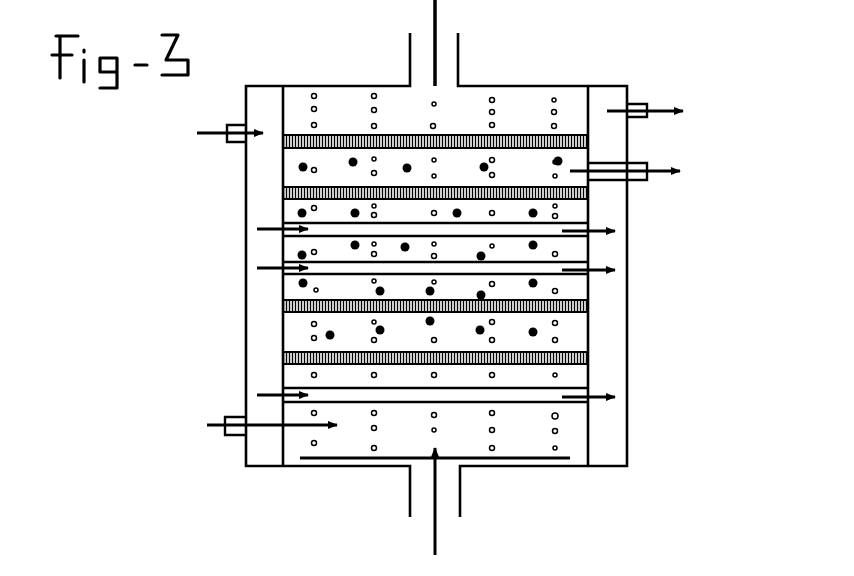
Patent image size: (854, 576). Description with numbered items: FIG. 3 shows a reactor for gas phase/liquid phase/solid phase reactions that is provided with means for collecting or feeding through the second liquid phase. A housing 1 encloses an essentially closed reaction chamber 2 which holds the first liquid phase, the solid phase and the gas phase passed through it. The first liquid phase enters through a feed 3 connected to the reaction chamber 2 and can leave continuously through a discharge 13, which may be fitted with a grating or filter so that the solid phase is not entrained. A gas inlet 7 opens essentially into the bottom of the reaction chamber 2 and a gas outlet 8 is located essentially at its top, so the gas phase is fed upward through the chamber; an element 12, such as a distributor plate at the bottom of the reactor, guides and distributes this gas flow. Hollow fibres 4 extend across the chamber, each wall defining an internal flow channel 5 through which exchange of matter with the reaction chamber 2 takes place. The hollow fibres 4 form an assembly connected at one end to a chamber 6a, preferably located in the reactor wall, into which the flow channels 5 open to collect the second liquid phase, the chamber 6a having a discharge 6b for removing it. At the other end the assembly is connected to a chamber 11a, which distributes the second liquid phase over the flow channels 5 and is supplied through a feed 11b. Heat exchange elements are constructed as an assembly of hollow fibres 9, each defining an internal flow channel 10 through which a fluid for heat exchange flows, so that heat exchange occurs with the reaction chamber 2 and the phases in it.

The housing 1 is at (351, 86).
The reaction chamber 2 is at (576, 432).
The feed 3 is at (234, 437).
The hollow fibre 4 is at (565, 388).
The flow channel 5 is at (318, 392).
The chamber 6a is at (606, 98).
The discharge 6b is at (643, 104).
The gas inlet 7 is at (452, 492).
The gas outlet 8 is at (452, 47).
The hollow fibre 9 is at (290, 300).
The flow channel 10 is at (283, 353).
The chamber 11a is at (257, 87).
The feed 11b is at (236, 143).
The element for guiding and/or distributing the gas flow 12 is at (548, 461).
The discharge 13 is at (640, 161).